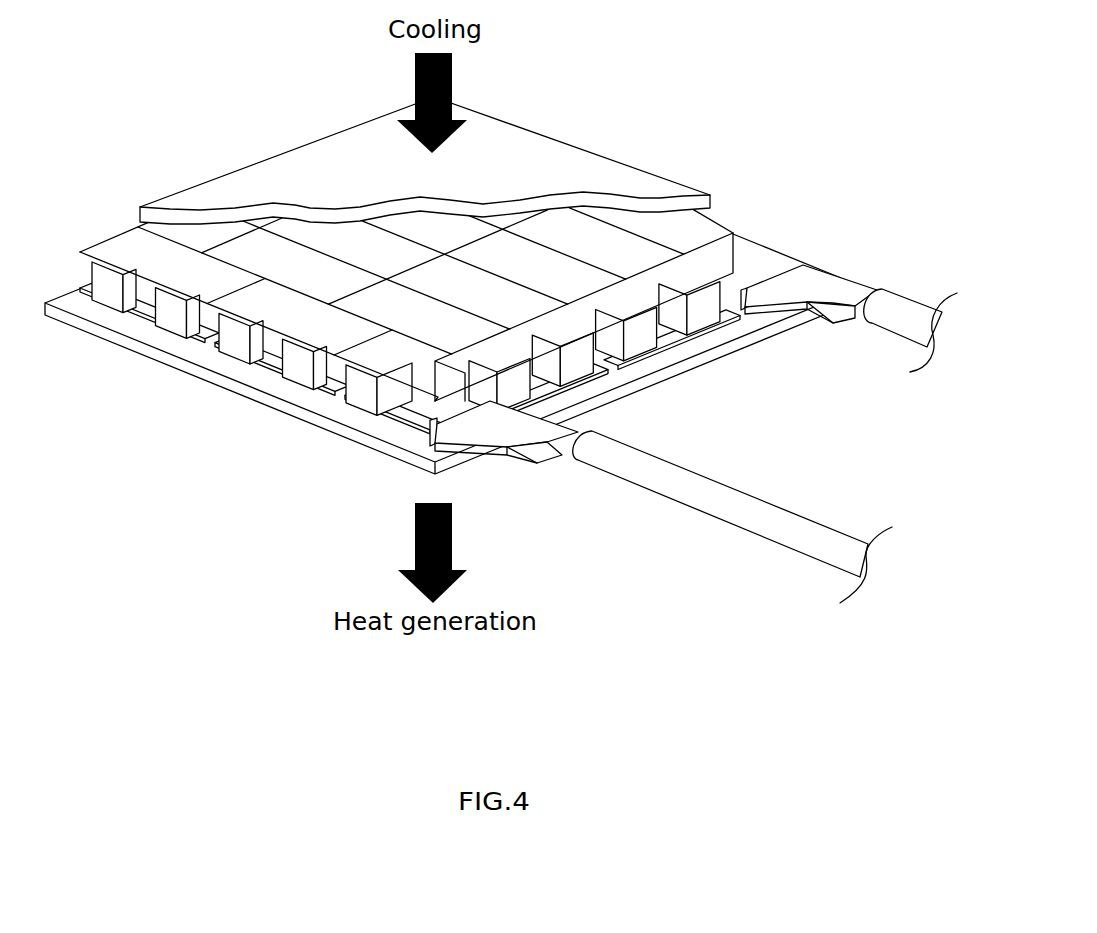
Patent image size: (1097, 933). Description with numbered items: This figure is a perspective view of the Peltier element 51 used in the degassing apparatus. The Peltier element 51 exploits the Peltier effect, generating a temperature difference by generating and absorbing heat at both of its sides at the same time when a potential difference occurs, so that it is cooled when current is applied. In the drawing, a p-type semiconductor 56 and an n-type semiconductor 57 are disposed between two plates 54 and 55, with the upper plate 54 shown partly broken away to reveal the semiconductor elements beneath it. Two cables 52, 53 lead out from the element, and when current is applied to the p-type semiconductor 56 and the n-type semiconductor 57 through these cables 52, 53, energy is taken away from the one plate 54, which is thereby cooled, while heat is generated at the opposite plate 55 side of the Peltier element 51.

The Peltier element 51 is at (501, 314).
The cable 52 is at (905, 312).
The cable 53 is at (737, 507).
The plate 54 is at (532, 137).
The plate 55 is at (345, 430).
The p-type semiconductor 56 is at (110, 298).
The n-type semiconductor 57 is at (175, 323).